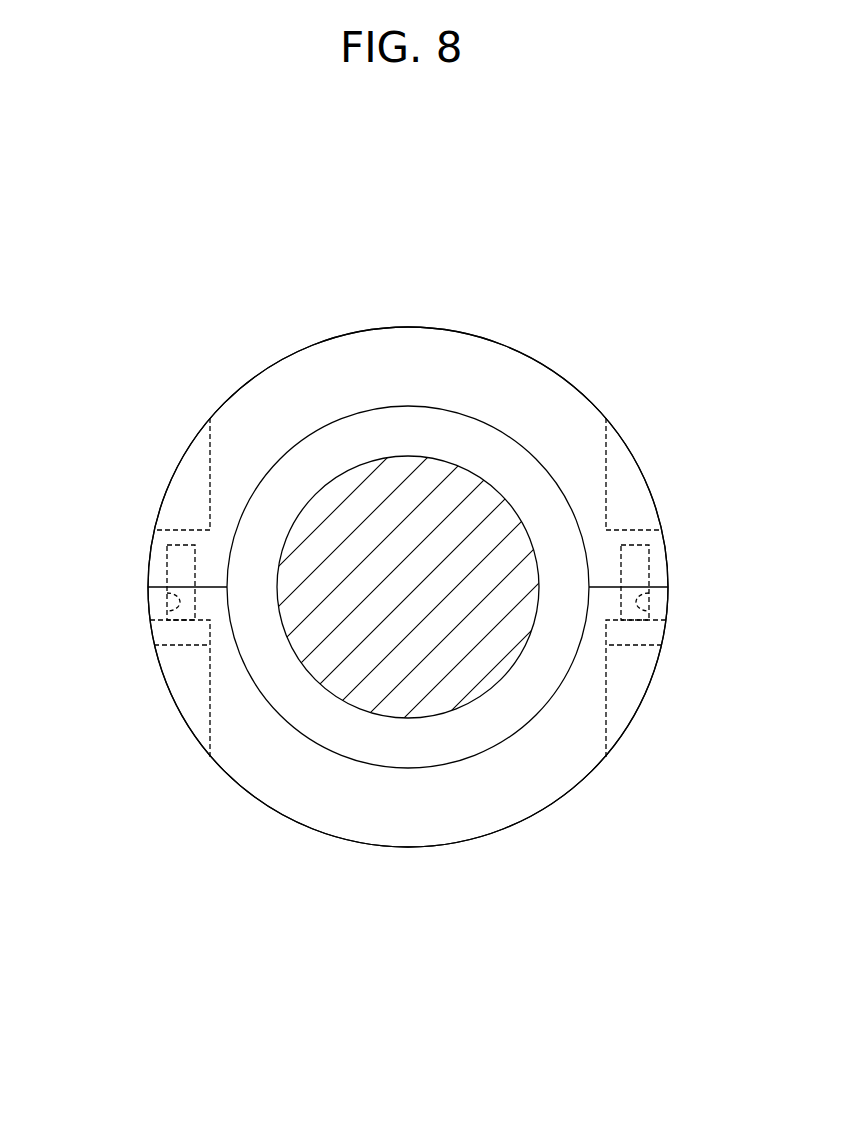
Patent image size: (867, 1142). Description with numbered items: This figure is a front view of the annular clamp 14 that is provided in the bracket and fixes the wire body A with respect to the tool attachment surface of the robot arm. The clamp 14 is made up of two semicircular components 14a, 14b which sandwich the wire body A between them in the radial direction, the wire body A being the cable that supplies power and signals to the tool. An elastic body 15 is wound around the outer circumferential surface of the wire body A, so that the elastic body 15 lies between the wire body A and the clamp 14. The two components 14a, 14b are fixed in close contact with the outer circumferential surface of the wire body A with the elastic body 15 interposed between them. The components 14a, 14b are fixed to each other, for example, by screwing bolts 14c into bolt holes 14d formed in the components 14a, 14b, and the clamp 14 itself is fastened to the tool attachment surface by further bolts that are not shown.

The clamp 14 is at (118, 756).
The semicircular component 14a is at (390, 847).
The semicircular component 14b is at (408, 327).
The bolt 14c is at (167, 565).
The bolt hole 14d is at (167, 605).
The elastic body 15 is at (469, 438).
The wire body A is at (350, 510).